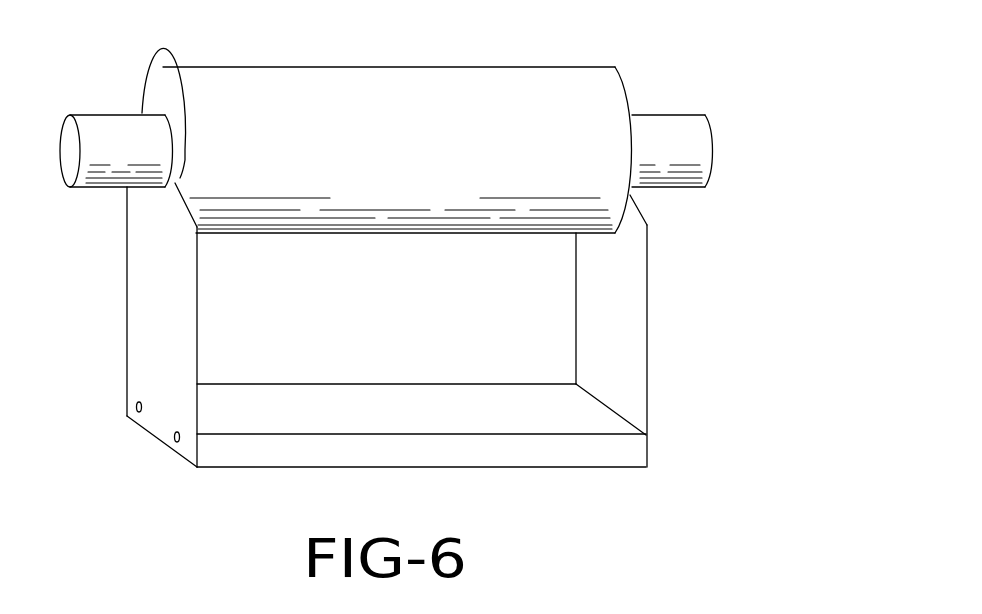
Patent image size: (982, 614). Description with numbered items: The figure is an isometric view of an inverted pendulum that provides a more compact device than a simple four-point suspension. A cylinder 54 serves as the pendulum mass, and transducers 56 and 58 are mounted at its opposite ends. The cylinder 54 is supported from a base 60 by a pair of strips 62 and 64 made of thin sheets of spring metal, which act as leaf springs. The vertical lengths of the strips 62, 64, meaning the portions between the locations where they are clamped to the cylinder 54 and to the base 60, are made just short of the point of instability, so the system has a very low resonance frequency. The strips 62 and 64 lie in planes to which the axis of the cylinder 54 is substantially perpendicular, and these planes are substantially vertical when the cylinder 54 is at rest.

The cylinder 54 is at (396, 82).
The transducer 56 is at (117, 128).
The transducer 58 is at (676, 124).
The base 60 is at (395, 455).
The strip 62 is at (136, 292).
The strip 64 is at (648, 333).